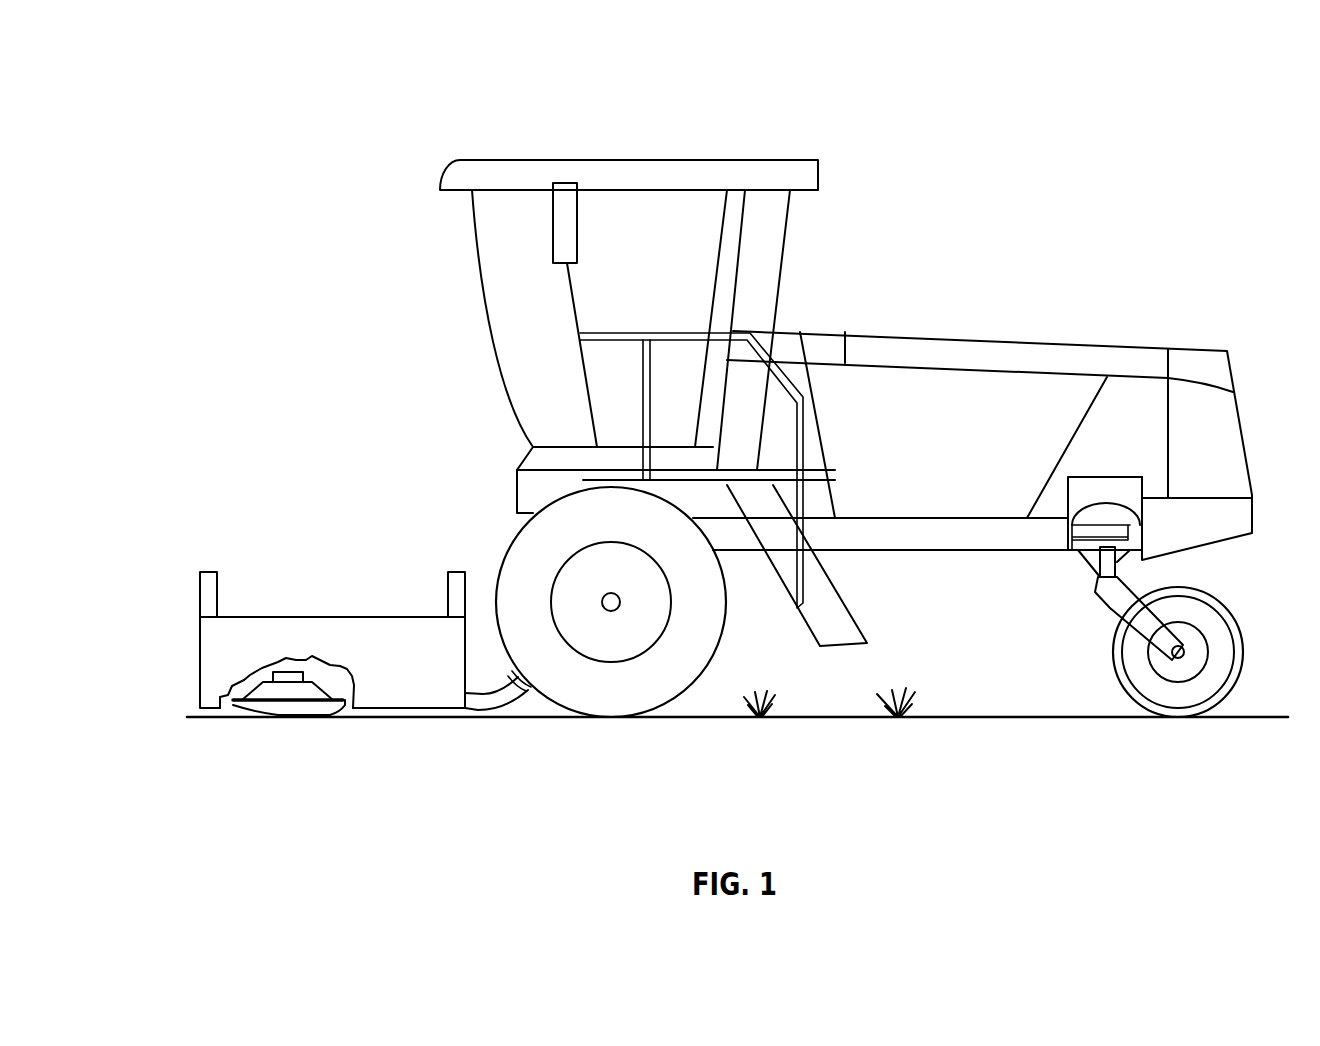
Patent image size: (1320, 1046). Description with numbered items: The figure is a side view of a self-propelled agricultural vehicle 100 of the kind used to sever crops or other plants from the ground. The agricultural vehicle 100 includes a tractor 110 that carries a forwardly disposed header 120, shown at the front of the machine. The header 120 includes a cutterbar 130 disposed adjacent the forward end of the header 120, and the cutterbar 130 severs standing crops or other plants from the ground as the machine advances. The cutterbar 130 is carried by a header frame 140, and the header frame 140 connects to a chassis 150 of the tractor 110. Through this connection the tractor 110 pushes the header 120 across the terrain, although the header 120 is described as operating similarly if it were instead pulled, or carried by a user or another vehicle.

The agricultural vehicle 100 is at (294, 62).
The tractor 110 is at (870, 322).
The header 120 is at (336, 574).
The cutterbar 130 is at (229, 702).
The header frame 140 is at (465, 660).
The chassis 150 is at (530, 513).